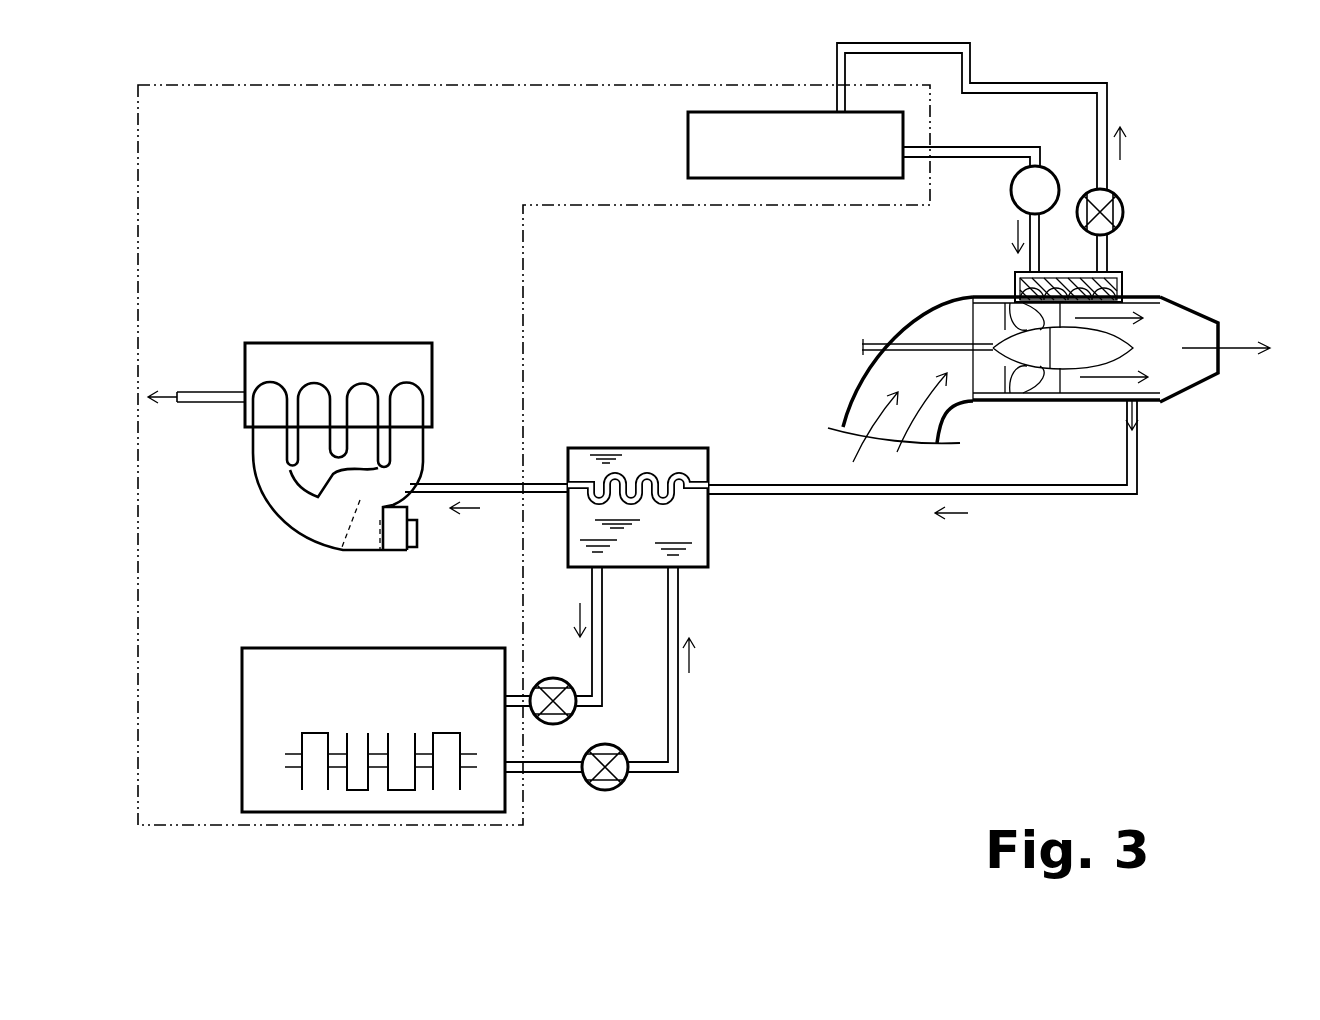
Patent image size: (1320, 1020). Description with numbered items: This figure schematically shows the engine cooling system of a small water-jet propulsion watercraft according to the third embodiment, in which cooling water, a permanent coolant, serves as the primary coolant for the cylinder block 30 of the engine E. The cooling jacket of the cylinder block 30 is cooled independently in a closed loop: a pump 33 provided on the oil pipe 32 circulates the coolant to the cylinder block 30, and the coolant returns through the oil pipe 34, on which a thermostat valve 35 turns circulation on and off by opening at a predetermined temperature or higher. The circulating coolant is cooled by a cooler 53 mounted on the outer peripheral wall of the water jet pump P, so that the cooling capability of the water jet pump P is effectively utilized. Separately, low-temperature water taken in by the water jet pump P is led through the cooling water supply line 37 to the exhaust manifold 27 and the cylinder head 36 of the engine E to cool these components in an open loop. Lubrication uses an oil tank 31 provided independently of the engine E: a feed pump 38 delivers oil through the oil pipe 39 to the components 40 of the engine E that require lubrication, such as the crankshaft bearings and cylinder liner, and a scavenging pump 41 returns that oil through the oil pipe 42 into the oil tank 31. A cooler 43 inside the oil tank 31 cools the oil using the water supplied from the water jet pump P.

The engine E is at (375, 83).
The water jet pump P is at (1150, 298).
The exhaust manifold 27 is at (403, 450).
The cylinder block 30 is at (688, 143).
The oil tank 31 is at (708, 555).
The oil pipe 32 is at (1107, 100).
The pump 33 is at (1125, 217).
The oil pipe 34 is at (962, 147).
The thermostat valve 35 is at (1011, 196).
The cylinder head 36 is at (375, 343).
The cooling water supply line 37 is at (1053, 499).
The feed pump 38 is at (563, 723).
The oil pipe 39 is at (592, 667).
The components of the engine 40 is at (285, 648).
The scavenging pump 41 is at (613, 793).
The oil pipe 42 is at (678, 727).
The cooler 43 is at (648, 472).
The cooler 53 is at (1013, 283).